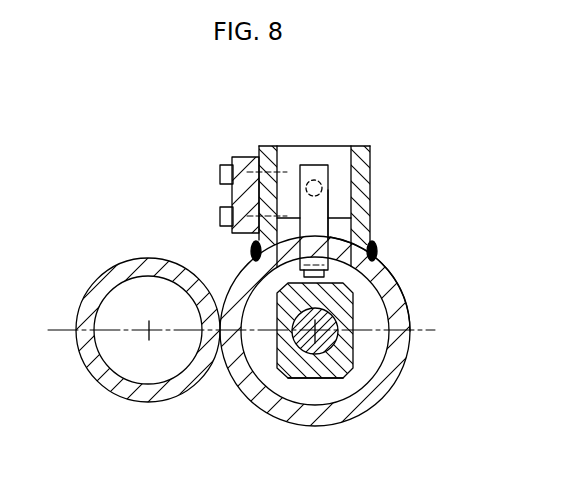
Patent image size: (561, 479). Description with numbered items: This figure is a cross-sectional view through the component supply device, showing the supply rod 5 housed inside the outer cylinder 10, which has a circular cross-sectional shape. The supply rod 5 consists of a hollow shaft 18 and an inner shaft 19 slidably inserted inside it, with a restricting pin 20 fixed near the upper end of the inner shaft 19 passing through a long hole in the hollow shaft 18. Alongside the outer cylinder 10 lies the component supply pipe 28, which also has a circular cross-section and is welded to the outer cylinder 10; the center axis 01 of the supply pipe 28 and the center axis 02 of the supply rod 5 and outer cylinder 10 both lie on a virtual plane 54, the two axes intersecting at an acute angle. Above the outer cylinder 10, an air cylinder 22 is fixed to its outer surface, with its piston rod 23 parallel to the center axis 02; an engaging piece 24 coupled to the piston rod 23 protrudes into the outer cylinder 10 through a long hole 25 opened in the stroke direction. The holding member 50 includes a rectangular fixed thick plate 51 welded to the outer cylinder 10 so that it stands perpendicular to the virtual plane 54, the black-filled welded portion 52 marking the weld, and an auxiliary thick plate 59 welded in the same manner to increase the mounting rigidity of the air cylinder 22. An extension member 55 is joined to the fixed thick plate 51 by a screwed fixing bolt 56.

The supply rod 5 is at (297, 390).
The outer cylinder 10 is at (243, 392).
The hollow shaft 18 is at (356, 358).
The inner shaft 19 is at (333, 340).
The restricting pin 20 is at (385, 272).
The air cylinder 22 is at (326, 156).
The piston rod 23 is at (313, 172).
The engaging piece 24 is at (320, 203).
The long hole 25 is at (336, 240).
The component supply pipe 28 is at (92, 284).
The holding member 50 is at (240, 146).
The fixed thick plate 51 is at (272, 150).
The welded portion 52 is at (252, 249).
The virtual plane 54 is at (422, 328).
The extension member 55 is at (242, 198).
The fixing bolt 56 is at (220, 175).
The auxiliary thick plate 59 is at (361, 150).
The center axis O1 01 is at (148, 331).
The center axis O2 02 is at (327, 357).